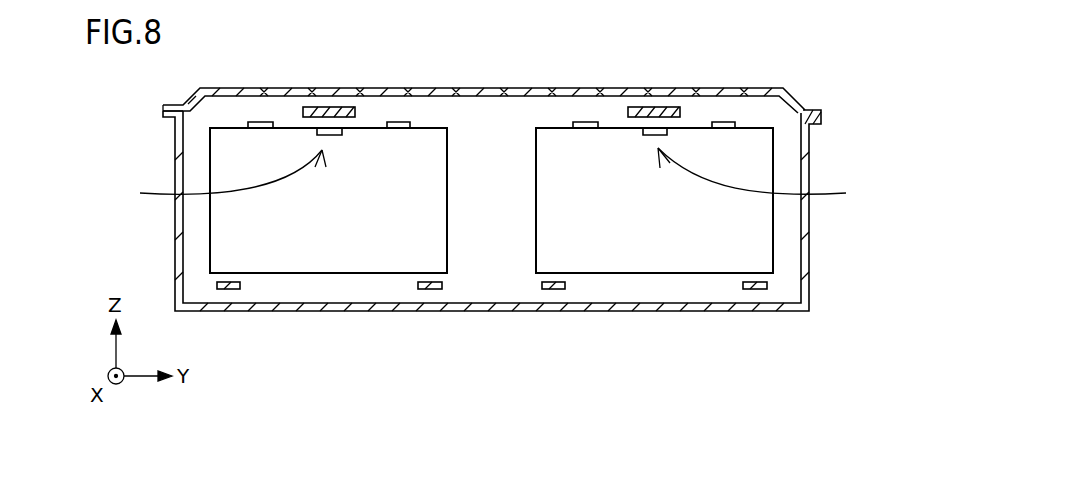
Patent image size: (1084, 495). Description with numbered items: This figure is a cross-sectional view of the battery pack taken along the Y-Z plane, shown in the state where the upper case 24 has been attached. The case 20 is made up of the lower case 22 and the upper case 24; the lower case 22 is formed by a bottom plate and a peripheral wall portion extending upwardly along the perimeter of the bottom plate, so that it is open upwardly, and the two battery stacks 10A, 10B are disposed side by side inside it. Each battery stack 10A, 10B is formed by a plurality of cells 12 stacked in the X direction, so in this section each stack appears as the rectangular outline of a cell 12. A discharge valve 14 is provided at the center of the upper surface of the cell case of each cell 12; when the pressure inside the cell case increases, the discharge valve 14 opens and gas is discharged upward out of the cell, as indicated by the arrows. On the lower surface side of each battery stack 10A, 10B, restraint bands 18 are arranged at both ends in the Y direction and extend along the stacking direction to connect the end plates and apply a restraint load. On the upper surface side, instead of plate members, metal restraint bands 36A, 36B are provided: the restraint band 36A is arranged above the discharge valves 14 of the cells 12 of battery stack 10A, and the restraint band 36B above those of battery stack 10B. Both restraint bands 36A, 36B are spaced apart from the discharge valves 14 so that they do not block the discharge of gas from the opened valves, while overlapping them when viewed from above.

The battery stack 10A is at (334, 344).
The battery stack 10B is at (665, 344).
The cell 12 is at (235, 237).
The discharge valve 14 is at (492, 177).
The restraint band 18 is at (229, 291).
The case 20 is at (876, 83).
The lower case 22 is at (809, 146).
The upper case 24 is at (790, 94).
The restraint band 36A is at (328, 106).
The restraint band 36B is at (653, 106).